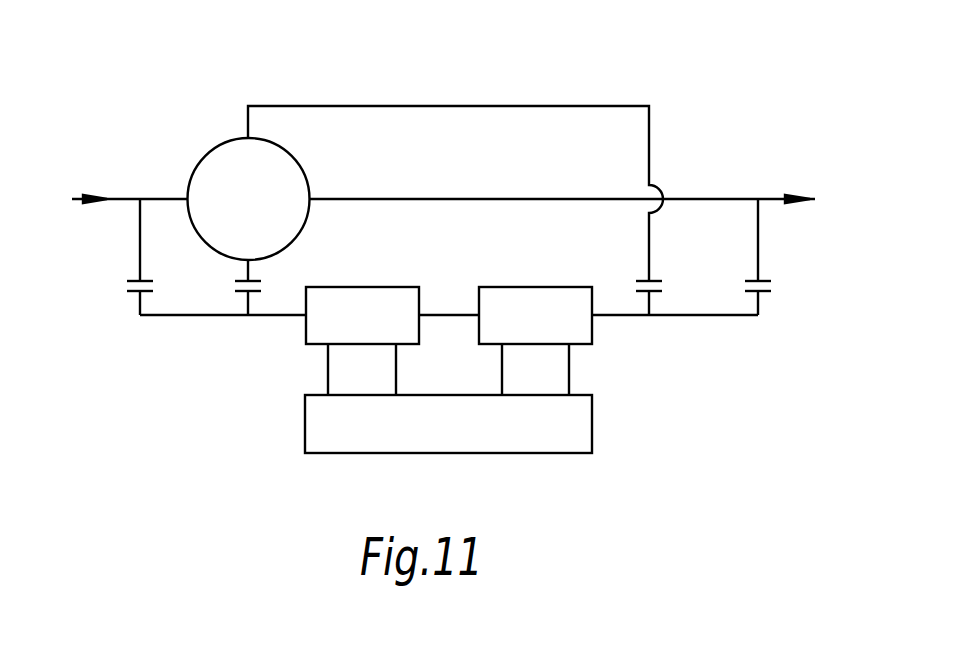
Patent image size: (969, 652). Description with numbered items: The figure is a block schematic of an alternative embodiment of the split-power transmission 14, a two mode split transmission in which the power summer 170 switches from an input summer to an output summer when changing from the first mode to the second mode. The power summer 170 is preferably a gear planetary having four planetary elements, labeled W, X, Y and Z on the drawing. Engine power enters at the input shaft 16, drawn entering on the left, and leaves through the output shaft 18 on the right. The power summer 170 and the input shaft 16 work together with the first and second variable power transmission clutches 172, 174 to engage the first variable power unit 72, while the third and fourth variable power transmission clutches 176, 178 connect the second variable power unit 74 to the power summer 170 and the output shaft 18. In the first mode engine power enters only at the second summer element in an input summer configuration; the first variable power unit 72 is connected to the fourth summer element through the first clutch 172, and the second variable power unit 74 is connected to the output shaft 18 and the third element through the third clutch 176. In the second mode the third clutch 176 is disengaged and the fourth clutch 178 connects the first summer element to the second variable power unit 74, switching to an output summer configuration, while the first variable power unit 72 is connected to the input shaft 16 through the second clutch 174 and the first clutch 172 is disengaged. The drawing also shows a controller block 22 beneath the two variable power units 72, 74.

The split-power transmission 14 is at (209, 42).
The input shaft 16 is at (151, 198).
The output shaft 18 is at (776, 198).
The power summer 170 is at (291, 240).
The first variable power transmission clutch 172 is at (243, 282).
The second variable power transmission clutch 174 is at (131, 293).
The third variable power transmission clutch 176 is at (767, 281).
The fourth variable power transmission clutch 178 is at (658, 281).
The first variable power unit 72 is at (305, 338).
The second variable power unit 74 is at (592, 345).
The controller 22 is at (545, 453).